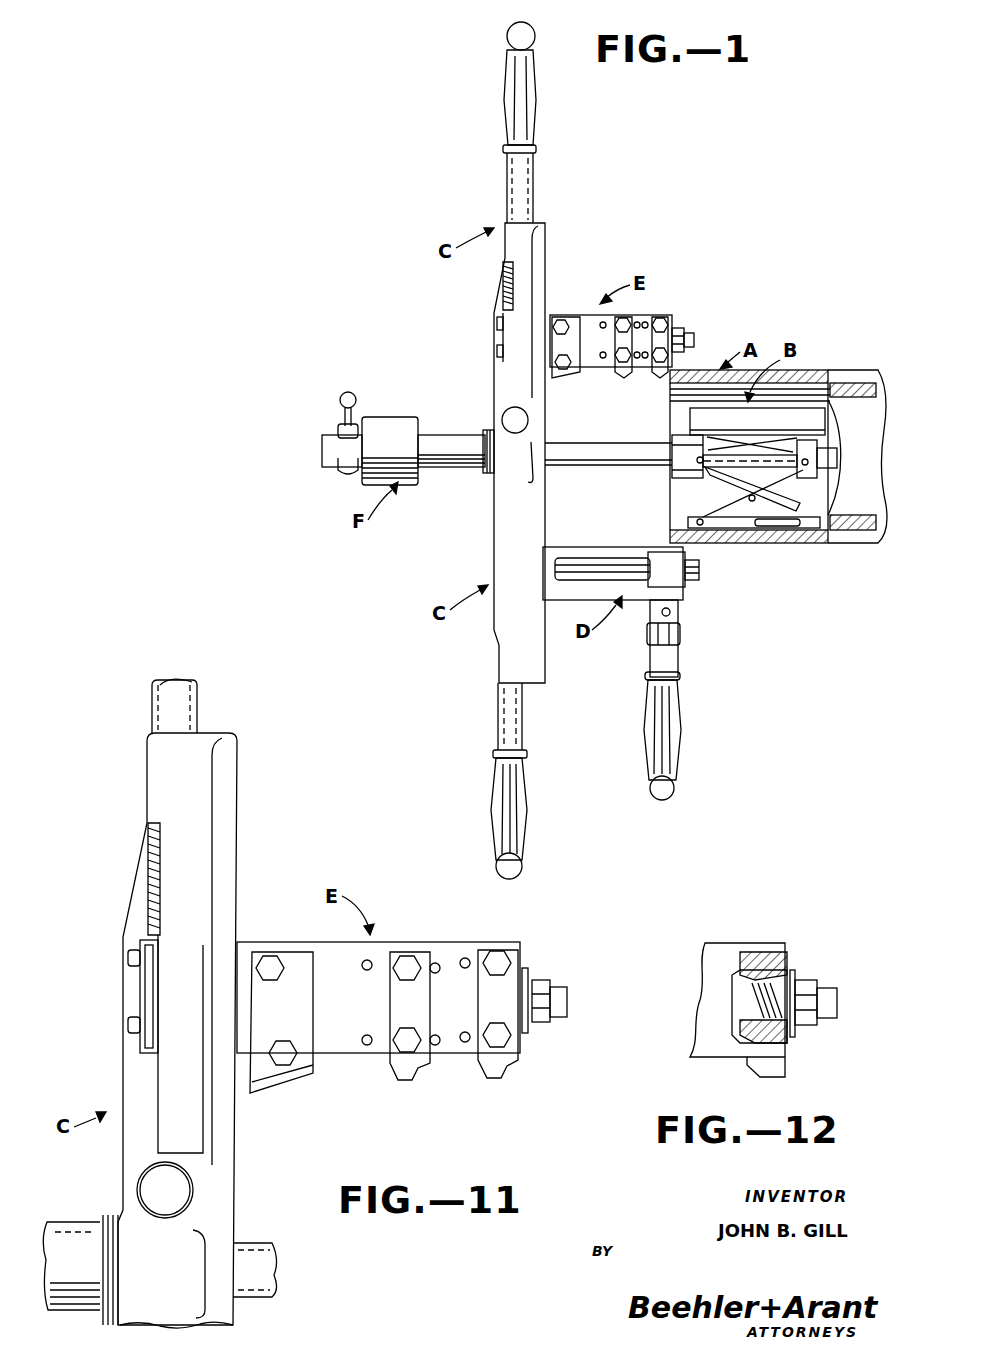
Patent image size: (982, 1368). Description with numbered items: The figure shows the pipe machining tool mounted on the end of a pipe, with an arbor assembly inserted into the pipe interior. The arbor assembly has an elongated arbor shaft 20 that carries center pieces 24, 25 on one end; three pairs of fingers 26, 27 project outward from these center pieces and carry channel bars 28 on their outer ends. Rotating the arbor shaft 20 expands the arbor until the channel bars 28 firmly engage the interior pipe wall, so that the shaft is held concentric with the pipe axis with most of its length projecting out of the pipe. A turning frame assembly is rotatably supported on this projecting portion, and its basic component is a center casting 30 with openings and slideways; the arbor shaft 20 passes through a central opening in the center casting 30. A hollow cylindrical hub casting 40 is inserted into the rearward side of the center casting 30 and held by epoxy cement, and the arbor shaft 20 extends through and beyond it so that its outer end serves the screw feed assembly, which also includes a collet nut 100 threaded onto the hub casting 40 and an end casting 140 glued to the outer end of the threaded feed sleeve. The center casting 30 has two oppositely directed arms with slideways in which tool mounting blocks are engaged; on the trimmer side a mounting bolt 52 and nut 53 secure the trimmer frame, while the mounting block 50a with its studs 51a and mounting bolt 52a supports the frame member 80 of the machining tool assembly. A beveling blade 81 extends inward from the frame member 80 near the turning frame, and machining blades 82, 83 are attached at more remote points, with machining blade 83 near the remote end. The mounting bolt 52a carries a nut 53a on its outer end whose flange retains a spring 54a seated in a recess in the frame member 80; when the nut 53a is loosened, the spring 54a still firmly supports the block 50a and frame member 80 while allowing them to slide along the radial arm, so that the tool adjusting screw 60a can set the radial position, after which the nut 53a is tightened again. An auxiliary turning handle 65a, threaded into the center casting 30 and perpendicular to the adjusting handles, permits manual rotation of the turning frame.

In FIG. 1, the arbor shaft 20 is at (605, 443).
In FIG. 11, the arbor shaft 20 is at (240, 1252).
In FIG. 1, the center piece 24 is at (672, 468).
In FIG. 1, the center piece 25 is at (814, 468).
In FIG. 1, the finger 26 is at (722, 482).
In FIG. 1, the finger 27 is at (792, 488).
In FIG. 1, the channel bar 28 is at (742, 530).
In FIG. 11, the center casting 30 is at (232, 783).
In FIG. 1, the hub casting 40 is at (460, 435).
In FIG. 11, the hub casting 40 is at (85, 1235).
In FIG. 11, the mounting block 50a is at (150, 988).
In FIG. 11, the stud 51a is at (130, 960).
In FIG. 1, the mounting bolt 52 is at (702, 570).
In FIG. 1, the mounting bolt 52a is at (690, 332).
In FIG. 11, the mounting bolt 52a is at (560, 990).
In FIG. 12, the mounting bolt 52a is at (828, 1000).
In FIG. 1, the nut 53 is at (695, 582).
In FIG. 1, the nut 53a is at (676, 326).
In FIG. 11, the nut 53a is at (542, 985).
In FIG. 12, the nut 53a is at (806, 980).
In FIG. 11, the spring 54a is at (527, 975).
In FIG. 12, the spring 54a is at (790, 955).
In FIG. 1, the tool adjusting screw 60a is at (530, 188).
In FIG. 11, the tool adjusting screw 60a is at (180, 704).
In FIG. 11, the auxiliary turning handle 65a is at (190, 1188).
In FIG. 11, the frame member 80 is at (452, 945).
In FIG. 11, the beveling blade 81 is at (278, 1078).
In FIG. 11, the machining blade 82 is at (405, 1070).
In FIG. 11, the machining blade 83 is at (495, 1068).
In FIG. 1, the collet nut 100 is at (415, 396).
In FIG. 1, the end casting 140 is at (347, 468).